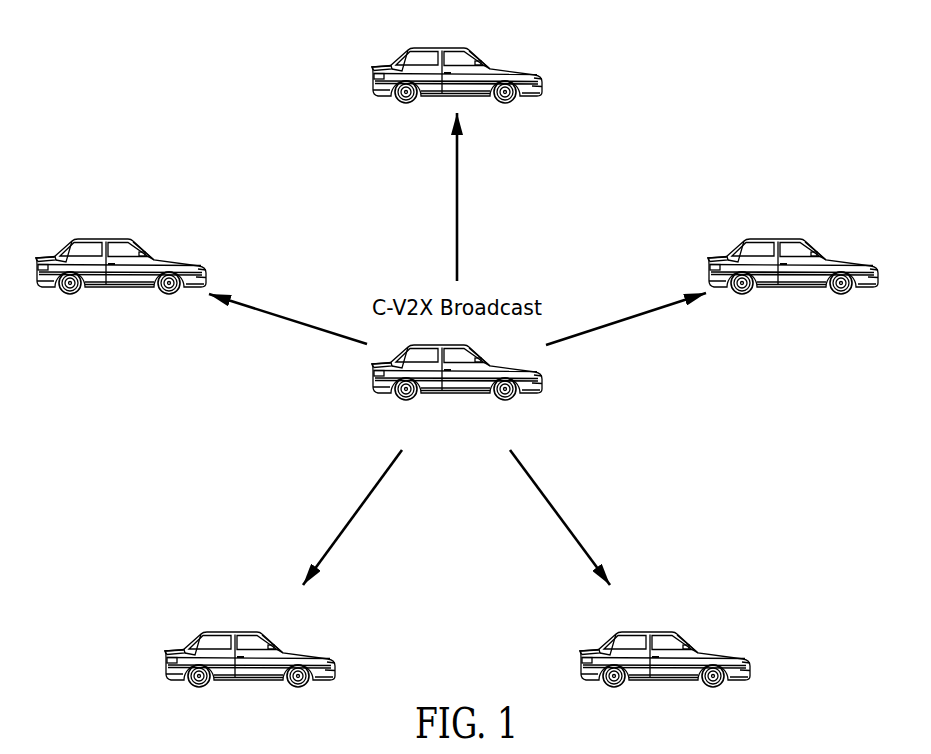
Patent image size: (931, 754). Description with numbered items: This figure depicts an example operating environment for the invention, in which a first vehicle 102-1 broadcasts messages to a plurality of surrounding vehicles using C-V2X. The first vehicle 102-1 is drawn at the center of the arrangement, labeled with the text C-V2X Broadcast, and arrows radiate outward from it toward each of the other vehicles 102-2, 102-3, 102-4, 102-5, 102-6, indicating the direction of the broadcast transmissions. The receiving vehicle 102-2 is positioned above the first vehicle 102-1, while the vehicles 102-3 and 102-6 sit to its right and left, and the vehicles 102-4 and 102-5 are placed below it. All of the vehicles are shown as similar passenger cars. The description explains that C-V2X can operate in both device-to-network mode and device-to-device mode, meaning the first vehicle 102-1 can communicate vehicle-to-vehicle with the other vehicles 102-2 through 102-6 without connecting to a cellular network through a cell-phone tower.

The first vehicle 102-1 is at (457, 400).
The vehicle 102-2 is at (437, 49).
The vehicle 102-3 is at (780, 238).
The vehicle 102-4 is at (652, 631).
The vehicle 102-5 is at (236, 631).
The vehicle 102-6 is at (107, 238).